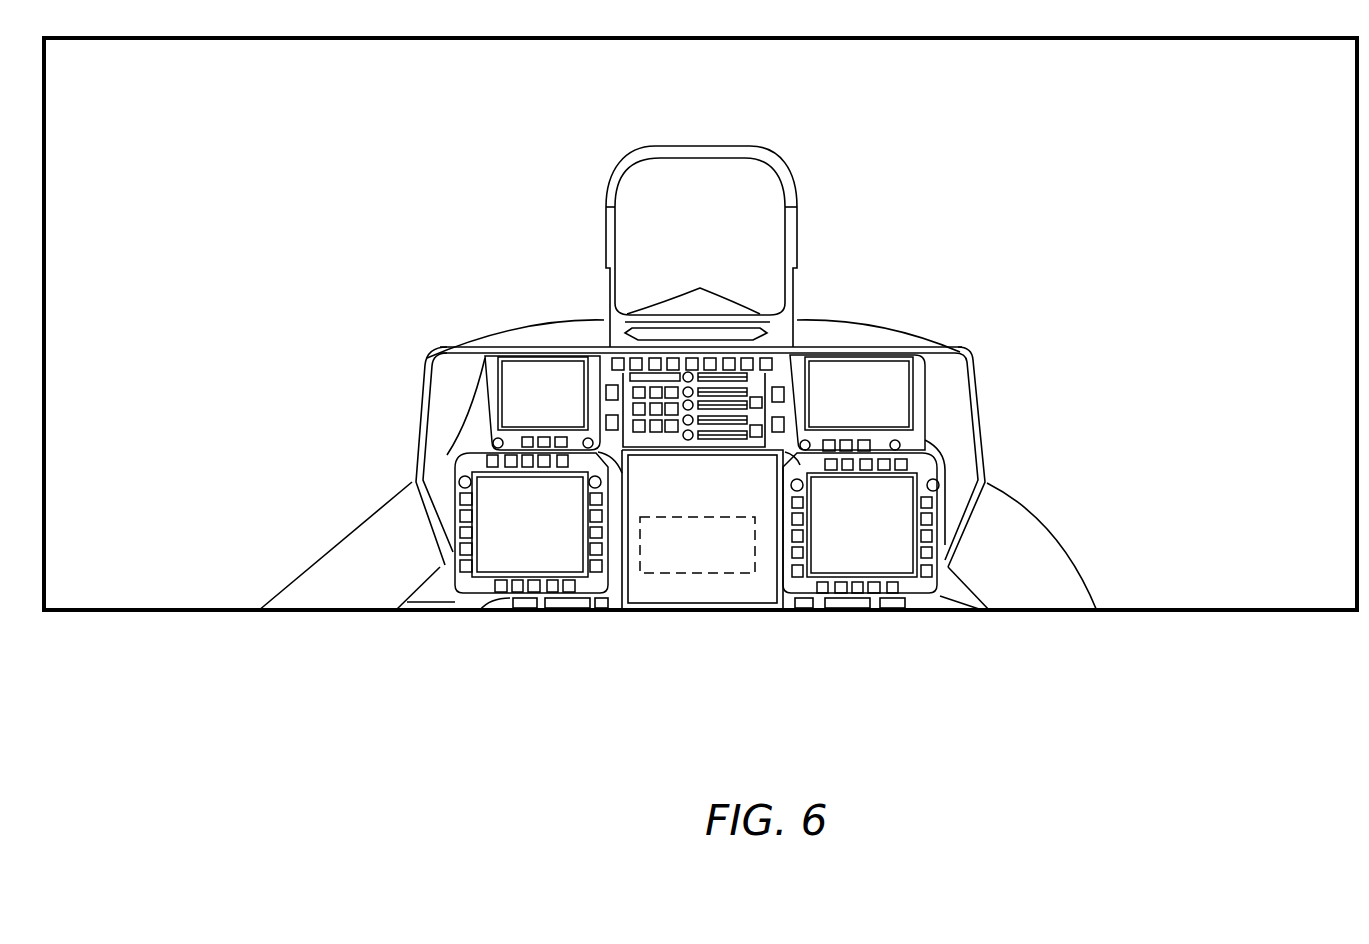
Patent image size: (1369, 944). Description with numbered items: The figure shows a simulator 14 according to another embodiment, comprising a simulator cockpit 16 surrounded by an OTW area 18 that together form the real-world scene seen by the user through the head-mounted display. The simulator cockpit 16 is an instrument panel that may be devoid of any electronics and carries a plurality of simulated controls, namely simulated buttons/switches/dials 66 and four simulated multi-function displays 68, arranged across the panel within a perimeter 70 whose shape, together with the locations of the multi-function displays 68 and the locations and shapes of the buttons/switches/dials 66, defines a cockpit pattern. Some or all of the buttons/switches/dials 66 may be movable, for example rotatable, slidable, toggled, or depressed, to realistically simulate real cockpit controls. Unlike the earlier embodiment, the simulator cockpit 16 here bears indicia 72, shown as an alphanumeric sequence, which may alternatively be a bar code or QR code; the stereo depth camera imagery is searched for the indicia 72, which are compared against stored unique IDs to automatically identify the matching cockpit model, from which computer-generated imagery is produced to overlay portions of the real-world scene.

The simulator 14 is at (1012, 37).
The simulator cockpit 16 is at (953, 350).
The OTW area 18 is at (207, 186).
The simulated buttons/switches/dials 66 is at (622, 360).
The simulated multi-function displays (MFDs) 68 is at (556, 396).
The perimeter 70 is at (782, 172).
The indicia 72 is at (748, 515).